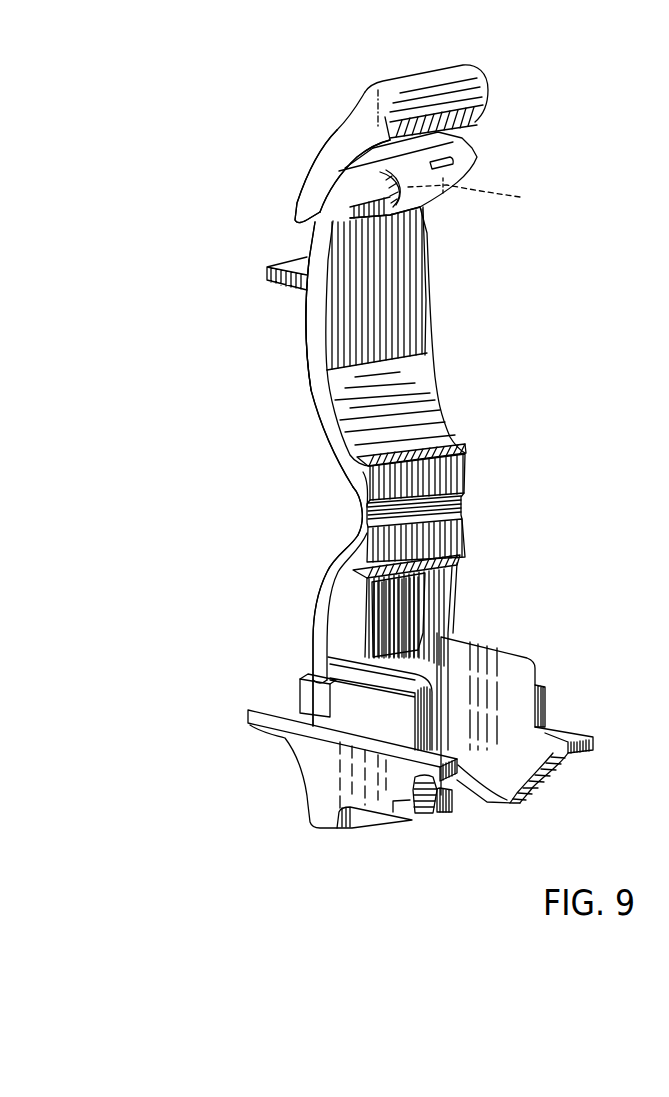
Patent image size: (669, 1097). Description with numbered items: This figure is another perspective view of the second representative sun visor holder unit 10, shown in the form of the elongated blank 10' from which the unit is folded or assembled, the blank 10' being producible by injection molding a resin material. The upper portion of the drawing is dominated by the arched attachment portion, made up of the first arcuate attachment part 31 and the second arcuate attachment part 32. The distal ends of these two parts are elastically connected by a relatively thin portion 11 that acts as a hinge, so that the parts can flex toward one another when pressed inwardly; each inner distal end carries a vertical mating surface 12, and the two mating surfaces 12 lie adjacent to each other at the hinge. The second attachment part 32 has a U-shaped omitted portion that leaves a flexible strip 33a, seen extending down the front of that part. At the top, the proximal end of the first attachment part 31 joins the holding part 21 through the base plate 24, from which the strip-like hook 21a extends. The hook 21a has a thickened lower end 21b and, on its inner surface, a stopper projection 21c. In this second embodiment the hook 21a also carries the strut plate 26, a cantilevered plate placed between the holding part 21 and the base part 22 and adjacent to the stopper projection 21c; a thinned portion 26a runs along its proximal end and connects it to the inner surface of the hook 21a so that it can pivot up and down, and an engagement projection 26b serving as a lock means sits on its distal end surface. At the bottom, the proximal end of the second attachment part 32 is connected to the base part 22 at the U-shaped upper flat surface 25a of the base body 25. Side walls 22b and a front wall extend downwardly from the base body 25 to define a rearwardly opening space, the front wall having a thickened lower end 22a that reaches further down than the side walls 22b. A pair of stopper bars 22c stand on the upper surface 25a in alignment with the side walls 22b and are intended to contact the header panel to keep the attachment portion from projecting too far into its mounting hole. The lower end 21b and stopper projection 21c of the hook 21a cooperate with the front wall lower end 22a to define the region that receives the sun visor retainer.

The blank 10' is at (419, 428).
The sun visor holder unit 10 is at (453, 306).
The thin portion 11 is at (355, 520).
The vertical mating surface 12 is at (458, 473).
The holding part 21 is at (417, 263).
The hook 21a is at (333, 140).
The thickened lower end 21b is at (455, 160).
The stopper projection 21c is at (484, 199).
The base part 22 is at (283, 737).
The thickened lower end 22a is at (337, 828).
The side walls 22b is at (433, 813).
The stopper bars 22c is at (310, 693).
The base plate 24 is at (278, 283).
The base body 25 is at (563, 730).
The upper flat surface 25a is at (283, 708).
The strut plate 26 is at (340, 168).
The thinned portion 26a is at (340, 208).
The engagement projection 26b is at (437, 152).
The first arcuate attachment part 31 is at (315, 410).
The second arcuate attachment part 32 is at (317, 597).
The flexible strip 33a is at (380, 642).